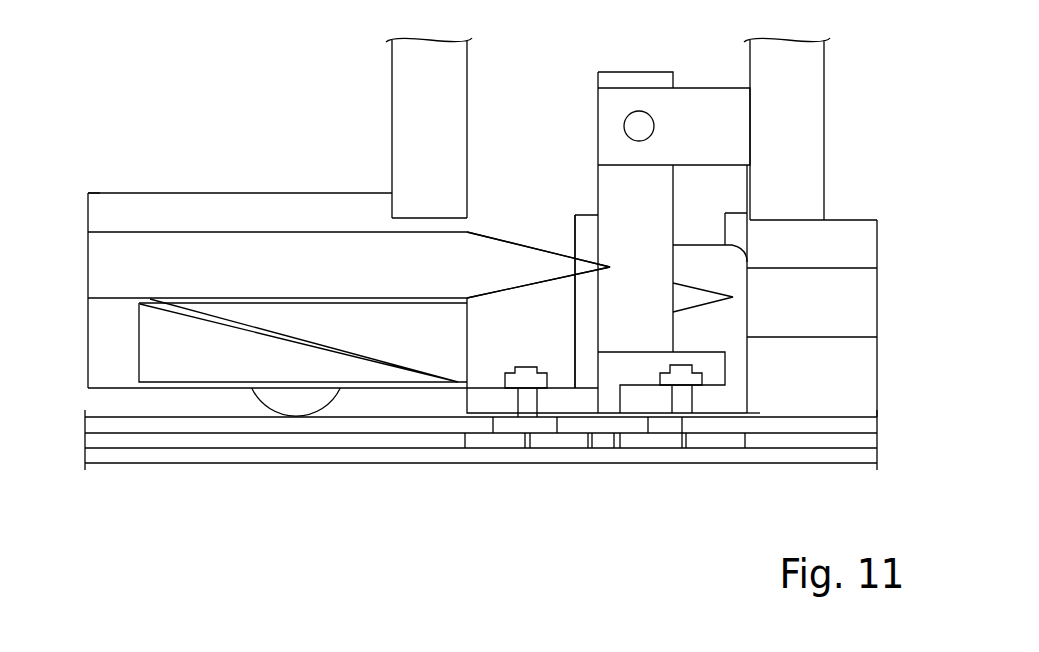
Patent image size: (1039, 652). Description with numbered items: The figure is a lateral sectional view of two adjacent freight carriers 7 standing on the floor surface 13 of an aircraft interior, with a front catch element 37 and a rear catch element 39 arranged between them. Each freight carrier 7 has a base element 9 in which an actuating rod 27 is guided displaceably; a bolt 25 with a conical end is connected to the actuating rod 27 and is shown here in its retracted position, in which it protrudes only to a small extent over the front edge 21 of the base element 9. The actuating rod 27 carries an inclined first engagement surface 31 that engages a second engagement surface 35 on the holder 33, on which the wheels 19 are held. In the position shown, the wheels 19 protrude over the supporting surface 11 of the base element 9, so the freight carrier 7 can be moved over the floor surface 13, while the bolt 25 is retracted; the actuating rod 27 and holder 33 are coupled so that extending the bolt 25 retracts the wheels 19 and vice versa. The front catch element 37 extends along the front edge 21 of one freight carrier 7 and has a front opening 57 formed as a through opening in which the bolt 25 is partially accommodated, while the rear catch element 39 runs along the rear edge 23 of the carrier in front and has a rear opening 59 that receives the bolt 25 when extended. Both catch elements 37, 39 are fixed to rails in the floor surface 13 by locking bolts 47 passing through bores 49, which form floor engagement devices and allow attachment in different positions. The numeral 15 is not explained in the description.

The freight carrier 7 is at (126, 150).
The base element 9 is at (245, 224).
The supporting surface 11 is at (122, 387).
The floor surface 13 is at (382, 425).
The top plate 15 is at (177, 193).
The wheel 19 is at (286, 402).
The front edge 21 is at (468, 208).
The rear edge 23 is at (762, 230).
The bolt 25 is at (508, 265).
The actuating rod 27 is at (238, 279).
The first engagement surface 31 is at (190, 312).
The holder 33 is at (244, 370).
The second engagement surface 35 is at (400, 367).
The front catch element 37 is at (588, 365).
The rear catch element 39 is at (735, 373).
The locking bolt 47 is at (515, 397).
The bore 49 is at (537, 400).
The front opening 57 is at (597, 303).
The rear opening 59 is at (685, 297).